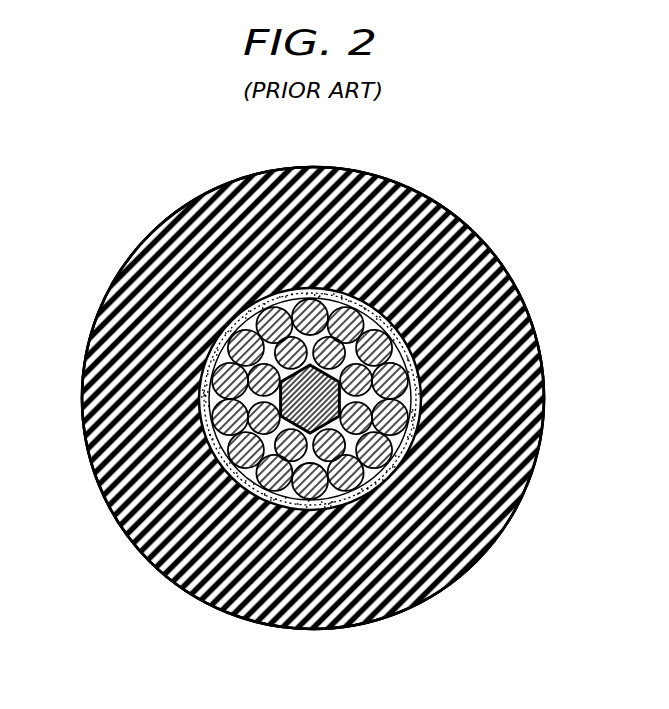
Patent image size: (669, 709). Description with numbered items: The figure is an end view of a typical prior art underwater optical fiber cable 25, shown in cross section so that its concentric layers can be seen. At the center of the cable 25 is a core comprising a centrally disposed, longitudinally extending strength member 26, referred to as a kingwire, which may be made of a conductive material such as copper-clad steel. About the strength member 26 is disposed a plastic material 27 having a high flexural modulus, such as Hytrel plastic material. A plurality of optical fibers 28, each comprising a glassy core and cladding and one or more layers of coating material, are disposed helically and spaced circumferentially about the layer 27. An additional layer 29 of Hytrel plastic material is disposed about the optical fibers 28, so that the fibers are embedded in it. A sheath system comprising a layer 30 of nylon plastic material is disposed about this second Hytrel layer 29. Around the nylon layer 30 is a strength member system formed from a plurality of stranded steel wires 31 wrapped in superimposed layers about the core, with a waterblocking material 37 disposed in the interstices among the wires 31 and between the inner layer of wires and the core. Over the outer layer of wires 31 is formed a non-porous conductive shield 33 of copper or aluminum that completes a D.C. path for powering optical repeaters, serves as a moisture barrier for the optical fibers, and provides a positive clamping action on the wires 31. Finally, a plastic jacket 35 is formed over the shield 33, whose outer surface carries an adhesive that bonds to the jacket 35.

The underwater cable 25 is at (298, 136).
The strength member 26 is at (413, 293).
The plastic material 27 is at (335, 410).
The optical fibers 28 is at (390, 472).
The additional layer of Hytrel plastic material 29 is at (405, 443).
The layer of nylon plastic material 30 is at (312, 500).
The stranded steel wires 31 is at (215, 395).
The conductive shield 33 is at (200, 358).
The plastic jacket 35 is at (192, 238).
The waterblocking material 37 is at (215, 452).